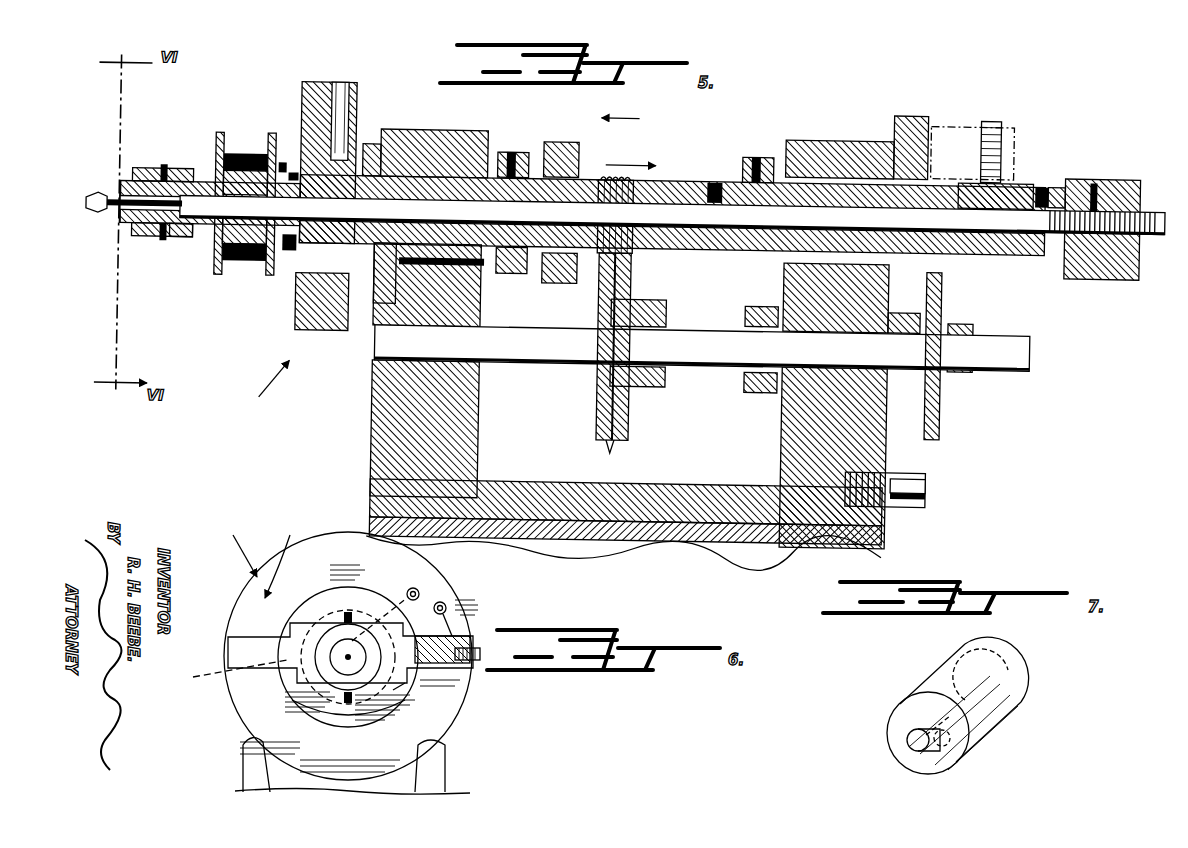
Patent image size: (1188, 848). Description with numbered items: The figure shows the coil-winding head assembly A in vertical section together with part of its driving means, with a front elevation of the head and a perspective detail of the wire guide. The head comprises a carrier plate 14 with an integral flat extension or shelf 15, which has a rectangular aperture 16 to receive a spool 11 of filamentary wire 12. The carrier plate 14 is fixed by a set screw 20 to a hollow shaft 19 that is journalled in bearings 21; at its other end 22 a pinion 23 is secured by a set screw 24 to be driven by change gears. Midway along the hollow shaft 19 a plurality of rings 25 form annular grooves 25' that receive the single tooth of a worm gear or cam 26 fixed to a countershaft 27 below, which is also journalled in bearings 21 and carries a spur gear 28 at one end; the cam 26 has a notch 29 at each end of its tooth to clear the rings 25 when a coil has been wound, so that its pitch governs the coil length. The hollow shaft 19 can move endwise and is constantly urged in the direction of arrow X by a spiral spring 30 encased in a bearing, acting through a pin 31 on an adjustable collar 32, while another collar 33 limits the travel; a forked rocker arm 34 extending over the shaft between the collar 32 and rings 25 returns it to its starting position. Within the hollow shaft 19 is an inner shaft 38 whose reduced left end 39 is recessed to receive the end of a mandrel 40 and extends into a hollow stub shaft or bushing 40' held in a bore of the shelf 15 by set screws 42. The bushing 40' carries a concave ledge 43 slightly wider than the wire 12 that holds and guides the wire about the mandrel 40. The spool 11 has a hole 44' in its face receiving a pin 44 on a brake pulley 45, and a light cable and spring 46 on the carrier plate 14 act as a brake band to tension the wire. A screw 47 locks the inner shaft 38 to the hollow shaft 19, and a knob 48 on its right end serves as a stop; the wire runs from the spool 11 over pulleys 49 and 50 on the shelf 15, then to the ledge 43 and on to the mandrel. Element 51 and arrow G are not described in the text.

In FIG. 5, the spool 11 is at (219, 131).
In FIG. 6, the spool 11 is at (335, 600).
In FIG. 5, the filamentary wire 12 is at (245, 152).
In FIG. 6, the filamentary wire 12 is at (420, 690).
In FIG. 5, the carrier plate 14 is at (320, 79).
In FIG. 6, the carrier plate 14 is at (427, 585).
In FIG. 5, the extension or shelf 15 is at (150, 168).
In FIG. 6, the extension or shelf 15 is at (255, 640).
In FIG. 5, the rectangular aperture 16 is at (200, 225).
In FIG. 5, the hollow shaft 19 is at (370, 140).
In FIG. 5, the set screw 20 is at (347, 100).
In FIG. 5, the bearings 21 is at (447, 140).
In FIG. 6, the bearings 21 is at (447, 783).
In FIG. 5, the other end of hollow shaft 22 is at (1055, 172).
In FIG. 5, the pinion 23 is at (995, 170).
In FIG. 5, the set screw 24 is at (1041, 172).
In FIG. 5, the rings 25 is at (635, 230).
In FIG. 5, the annular grooves 25' is at (642, 167).
In FIG. 5, the worm gear or cam 26 is at (632, 418).
In FIG. 6, the worm gear or cam 26 is at (258, 762).
In FIG. 5, the countershaft 27 is at (540, 345).
In FIG. 5, the spur gear 28 is at (943, 415).
In FIG. 5, the notch 29 is at (614, 444).
In FIG. 5, the spiral spring 30 is at (378, 298).
In FIG. 5, the pin 31 is at (482, 292).
In FIG. 5, the adjustable collar 32 is at (507, 146).
In FIG. 5, the collar 33 is at (755, 147).
In FIG. 5, the rocker arm 34 is at (560, 137).
In FIG. 5, the inner shaft 38 is at (662, 205).
In FIG. 5, the left end of inner shaft 39 is at (175, 237).
In FIG. 6, the left end of inner shaft 39 is at (335, 630).
In FIG. 5, the mandrel 40 is at (89, 221).
In FIG. 5, the hollow stub shaft or bushing 40' is at (106, 164).
In FIG. 6, the hollow stub shaft or bushing 40' is at (282, 557).
In FIG. 7, the hollow stub shaft or bushing 40' is at (979, 705).
In FIG. 5, the set screws 42 is at (163, 164).
In FIG. 6, the set screws 42 is at (352, 612).
In FIG. 5, the extension or ledge 43 is at (125, 201).
In FIG. 6, the extension or ledge 43 is at (393, 690).
In FIG. 7, the extension or ledge 43 is at (950, 745).
In FIG. 5, the pin 44 is at (287, 147).
In FIG. 5, the hole 44' is at (275, 131).
In FIG. 5, the brake pulley 45 is at (297, 300).
In FIG. 6, the brake pulley 45 is at (228, 680).
In FIG. 5, the cable and spring 46 is at (288, 250).
In FIG. 6, the cable and spring 46 is at (416, 588).
In FIG. 5, the screw 47 is at (712, 173).
In FIG. 5, the knob 48 is at (1110, 163).
In FIG. 6, the pulley 49 is at (452, 622).
In FIG. 6, the pulley 50 is at (474, 665).
In FIG. 5, the handle 51 is at (995, 107).
In FIG. 5, the coil-winding head assembly A is at (265, 387).
In FIG. 6, the coil-winding head assembly A is at (238, 548).
In FIG. 5, the direction arrow G is at (628, 117).
In FIG. 5, the arrow X is at (631, 157).